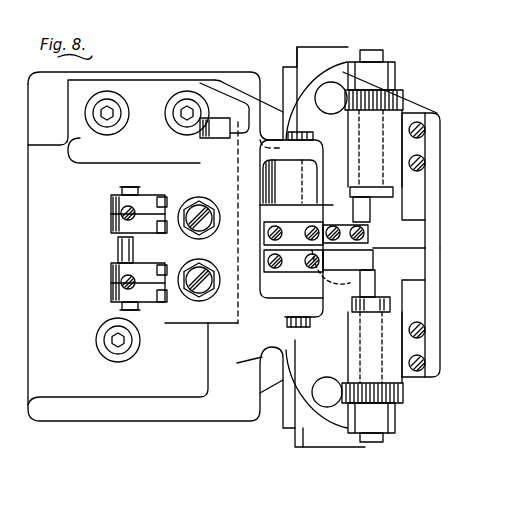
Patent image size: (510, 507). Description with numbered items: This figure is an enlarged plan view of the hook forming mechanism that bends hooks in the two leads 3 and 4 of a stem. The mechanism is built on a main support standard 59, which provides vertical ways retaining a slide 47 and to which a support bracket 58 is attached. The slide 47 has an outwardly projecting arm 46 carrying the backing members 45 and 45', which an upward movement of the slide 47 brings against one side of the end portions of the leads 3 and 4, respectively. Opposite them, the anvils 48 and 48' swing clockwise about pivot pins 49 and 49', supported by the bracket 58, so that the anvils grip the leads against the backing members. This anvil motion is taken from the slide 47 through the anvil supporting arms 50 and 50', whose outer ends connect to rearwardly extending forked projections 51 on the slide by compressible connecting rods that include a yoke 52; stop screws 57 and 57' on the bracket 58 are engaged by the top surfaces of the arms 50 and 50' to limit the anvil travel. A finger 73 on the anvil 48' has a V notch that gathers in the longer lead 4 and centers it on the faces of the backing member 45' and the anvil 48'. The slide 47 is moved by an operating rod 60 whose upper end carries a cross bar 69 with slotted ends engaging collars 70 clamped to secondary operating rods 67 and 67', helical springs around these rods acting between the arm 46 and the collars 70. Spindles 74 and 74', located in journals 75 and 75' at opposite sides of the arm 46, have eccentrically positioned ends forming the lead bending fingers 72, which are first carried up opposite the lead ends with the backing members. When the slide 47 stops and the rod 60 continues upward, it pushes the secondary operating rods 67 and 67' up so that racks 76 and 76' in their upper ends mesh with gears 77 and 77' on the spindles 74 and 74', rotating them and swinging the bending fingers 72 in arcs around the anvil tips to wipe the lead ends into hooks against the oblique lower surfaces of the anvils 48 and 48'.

The lead 3 is at (376, 262).
The lead 4 is at (378, 238).
The backing member 45 is at (417, 312).
The backing member 45' is at (404, 160).
The outwardly projecting arm 46 is at (441, 158).
The slide 47 is at (237, 364).
The anvil 48 is at (307, 281).
The anvil 48' is at (296, 182).
The pivot pin 49 is at (306, 347).
The pivot pin 49' is at (283, 98).
The anvil supporting arm 50 is at (169, 303).
The anvil supporting arm 50' is at (167, 203).
The forked projection 51 is at (118, 248).
The yoke 52 is at (112, 200).
The stop screw 57 is at (199, 301).
The stop screw 57' is at (199, 202).
The support bracket 58 is at (237, 90).
The main support standard 59 is at (122, 419).
The operating rod 60 is at (309, 290).
The secondary operating rod 67 is at (315, 426).
The secondary operating rod 67' is at (320, 66).
The cross bar 69 is at (288, 430).
The collar 70 is at (347, 447).
The lead bending finger 72 is at (356, 195).
The finger 73 is at (370, 135).
The spindle 74 is at (414, 347).
The spindle 74' is at (420, 148).
The journal 75 is at (316, 393).
The journal 75' is at (316, 94).
The rack 76 is at (356, 440).
The rack 76' is at (369, 53).
The gear 77 is at (387, 412).
The gear 77' is at (391, 81).